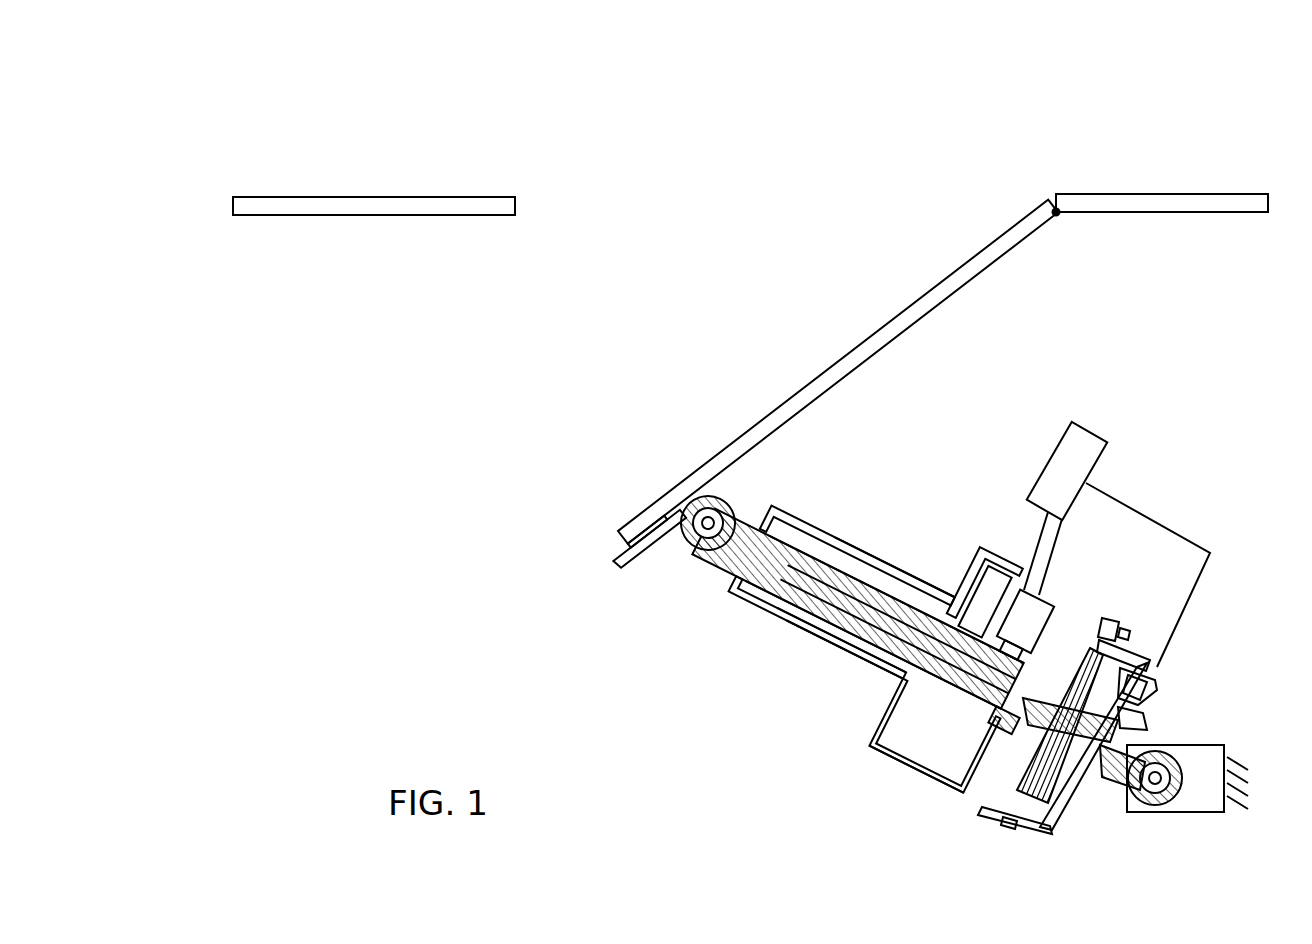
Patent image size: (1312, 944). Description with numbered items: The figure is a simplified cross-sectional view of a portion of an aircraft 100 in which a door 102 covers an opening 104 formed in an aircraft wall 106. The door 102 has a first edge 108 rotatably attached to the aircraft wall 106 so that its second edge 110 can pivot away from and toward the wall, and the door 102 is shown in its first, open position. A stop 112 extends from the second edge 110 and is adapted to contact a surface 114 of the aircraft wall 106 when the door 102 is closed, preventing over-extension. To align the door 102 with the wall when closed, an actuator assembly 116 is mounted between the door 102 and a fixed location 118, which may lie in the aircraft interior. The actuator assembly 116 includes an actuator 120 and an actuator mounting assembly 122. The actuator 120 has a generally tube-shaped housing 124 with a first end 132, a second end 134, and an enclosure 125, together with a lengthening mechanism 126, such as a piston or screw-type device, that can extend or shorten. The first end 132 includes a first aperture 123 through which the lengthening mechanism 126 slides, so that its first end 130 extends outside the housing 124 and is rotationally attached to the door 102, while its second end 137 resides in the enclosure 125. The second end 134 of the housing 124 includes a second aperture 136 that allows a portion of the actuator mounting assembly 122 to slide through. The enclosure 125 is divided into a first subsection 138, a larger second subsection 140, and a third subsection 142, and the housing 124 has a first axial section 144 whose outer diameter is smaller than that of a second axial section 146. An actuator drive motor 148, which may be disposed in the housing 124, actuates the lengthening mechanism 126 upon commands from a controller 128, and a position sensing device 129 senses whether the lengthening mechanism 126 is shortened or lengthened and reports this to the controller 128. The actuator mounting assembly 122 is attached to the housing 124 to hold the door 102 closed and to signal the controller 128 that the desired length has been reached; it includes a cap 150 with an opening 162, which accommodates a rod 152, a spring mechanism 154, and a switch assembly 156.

The aircraft 100 is at (408, 122).
The door 102 is at (912, 322).
The opening 104 is at (814, 186).
The aircraft wall 106 is at (1103, 208).
The first edge 108 is at (1051, 201).
The second edge 110 is at (615, 540).
The stop 112 is at (612, 566).
The surface 114 is at (467, 215).
The actuator assembly 116 is at (800, 750).
The fixed location 118 is at (1220, 745).
The actuator 120 is at (853, 546).
The actuator mounting assembly 122 is at (1172, 670).
The first aperture 123 is at (746, 572).
The housing 124 is at (878, 558).
The enclosure 125 is at (862, 655).
The lengthening mechanism 126 is at (768, 586).
The controller 128 is at (1093, 432).
The position sensing device 129 is at (985, 560).
The first end 130 is at (700, 508).
The first end 132 is at (771, 512).
The second end 134 is at (990, 820).
The second aperture 136 is at (1087, 655).
The second end 137 is at (1008, 740).
The first subsection 138 is at (806, 630).
The second subsection 140 is at (897, 762).
The third subsection 142 is at (1068, 640).
The first axial section 144 is at (924, 565).
The second axial section 146 is at (935, 796).
The actuator drive motor 148 is at (1045, 566).
The cap 150 is at (1158, 688).
The rod 152 is at (1117, 778).
The spring mechanism 154 is at (1100, 650).
The switch assembly 156 is at (1144, 716).
The opening 162 is at (1100, 745).